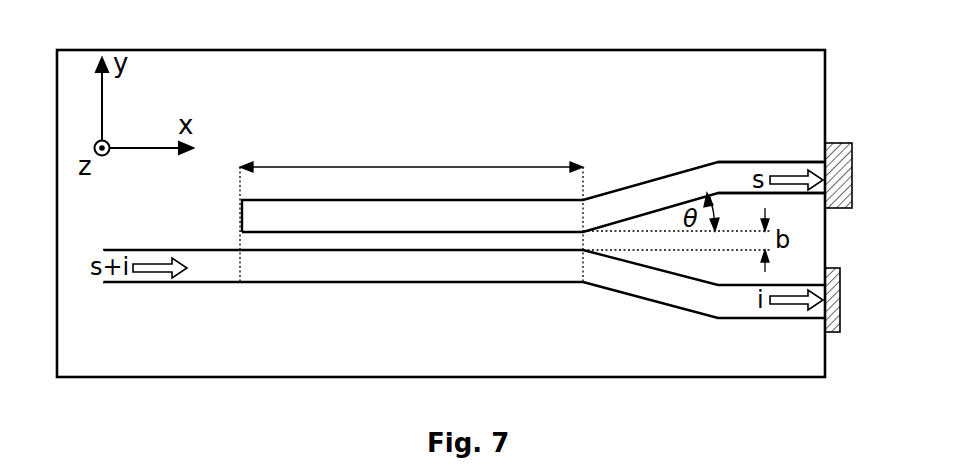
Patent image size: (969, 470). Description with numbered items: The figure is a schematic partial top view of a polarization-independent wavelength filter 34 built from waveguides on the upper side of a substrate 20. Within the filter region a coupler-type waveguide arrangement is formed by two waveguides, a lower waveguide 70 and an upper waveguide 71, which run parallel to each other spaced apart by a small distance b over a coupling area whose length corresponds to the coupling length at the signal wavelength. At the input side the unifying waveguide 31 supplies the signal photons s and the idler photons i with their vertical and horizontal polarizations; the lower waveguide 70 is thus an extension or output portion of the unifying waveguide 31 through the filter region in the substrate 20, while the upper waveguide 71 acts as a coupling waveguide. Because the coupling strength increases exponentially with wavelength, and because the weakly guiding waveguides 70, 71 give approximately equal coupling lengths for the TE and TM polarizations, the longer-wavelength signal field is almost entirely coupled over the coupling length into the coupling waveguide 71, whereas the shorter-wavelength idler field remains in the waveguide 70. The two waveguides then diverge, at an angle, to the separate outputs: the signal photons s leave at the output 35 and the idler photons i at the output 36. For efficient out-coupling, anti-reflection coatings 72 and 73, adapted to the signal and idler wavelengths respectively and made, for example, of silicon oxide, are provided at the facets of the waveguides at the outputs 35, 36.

The substrate 20 is at (173, 50).
The unifying waveguide 31 is at (107, 280).
The polarization-independent wavelength filter 34 is at (473, 143).
The output 35 is at (787, 165).
The output 36 is at (787, 315).
The lower waveguide 70 is at (183, 280).
The upper waveguide 71 is at (242, 217).
The anti-reflection coating 72 is at (843, 149).
The anti-reflection coating 73 is at (835, 283).